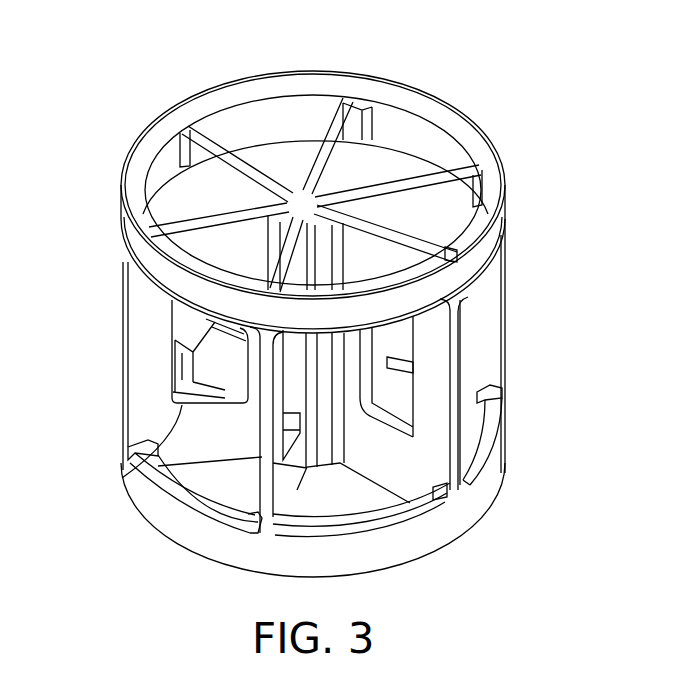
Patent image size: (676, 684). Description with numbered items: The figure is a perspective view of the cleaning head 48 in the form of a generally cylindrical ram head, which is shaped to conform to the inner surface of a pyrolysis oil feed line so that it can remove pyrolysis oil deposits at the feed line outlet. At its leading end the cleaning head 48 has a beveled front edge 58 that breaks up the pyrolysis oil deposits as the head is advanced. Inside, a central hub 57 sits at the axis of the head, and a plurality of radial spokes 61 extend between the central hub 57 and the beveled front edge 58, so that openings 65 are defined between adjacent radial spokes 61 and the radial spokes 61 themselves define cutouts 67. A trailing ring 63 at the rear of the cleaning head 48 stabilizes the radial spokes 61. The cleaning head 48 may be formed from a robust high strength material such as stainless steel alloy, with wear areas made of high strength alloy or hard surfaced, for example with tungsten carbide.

The cleaning head 48 is at (474, 76).
The central hub 57 is at (300, 182).
The beveled front edge 58 is at (123, 178).
The radial spokes 61 is at (132, 386).
The trailing ring 63 is at (177, 533).
The openings 65 is at (336, 135).
The cutouts 67 is at (136, 474).